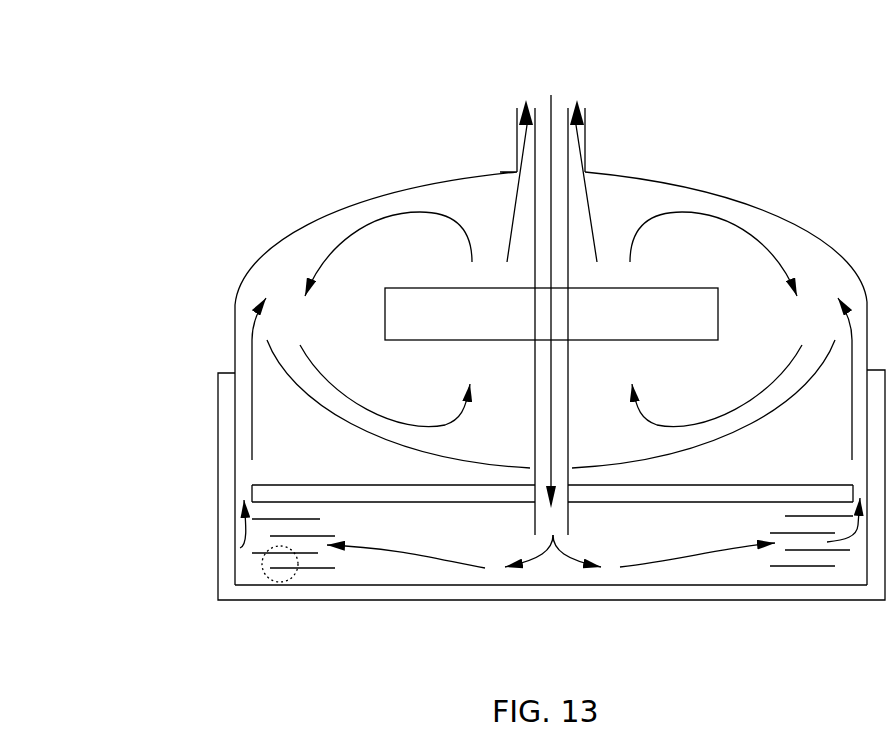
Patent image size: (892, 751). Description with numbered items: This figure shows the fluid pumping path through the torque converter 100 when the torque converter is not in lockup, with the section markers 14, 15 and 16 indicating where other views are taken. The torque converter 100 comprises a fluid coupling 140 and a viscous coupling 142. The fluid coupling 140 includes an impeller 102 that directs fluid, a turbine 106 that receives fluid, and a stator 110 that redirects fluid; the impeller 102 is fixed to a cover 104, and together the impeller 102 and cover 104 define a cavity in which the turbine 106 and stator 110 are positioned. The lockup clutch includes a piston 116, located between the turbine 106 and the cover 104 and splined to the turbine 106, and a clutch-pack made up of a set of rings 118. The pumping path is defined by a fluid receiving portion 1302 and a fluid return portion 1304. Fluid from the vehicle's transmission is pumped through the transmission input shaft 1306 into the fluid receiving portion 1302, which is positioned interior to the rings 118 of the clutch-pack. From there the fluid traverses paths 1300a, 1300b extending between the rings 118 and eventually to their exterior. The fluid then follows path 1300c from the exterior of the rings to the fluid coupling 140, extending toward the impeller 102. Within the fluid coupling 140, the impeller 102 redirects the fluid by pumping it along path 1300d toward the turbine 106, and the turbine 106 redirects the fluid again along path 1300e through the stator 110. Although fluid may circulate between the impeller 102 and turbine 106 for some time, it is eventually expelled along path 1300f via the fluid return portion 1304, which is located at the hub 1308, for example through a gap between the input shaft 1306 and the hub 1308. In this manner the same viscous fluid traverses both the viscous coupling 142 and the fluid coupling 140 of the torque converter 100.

The torque converter 100 is at (721, 89).
The impeller 102 is at (790, 226).
The cover 104 is at (740, 600).
The turbine 106 is at (770, 418).
The stator 110 is at (497, 331).
The piston 116 is at (727, 483).
The clutch-pack rings 118 is at (304, 574).
The fluid coupling 140 is at (372, 340).
The viscous coupling 142 is at (643, 549).
The fluid receiving portion 1302 is at (517, 549).
The fluid return portion 1304 is at (576, 185).
The transmission input shaft 1306 is at (569, 380).
The hub 1308 is at (517, 150).
The fluid pumping path portion 1300a is at (406, 547).
The fluid pumping path portion 1300b is at (240, 548).
The fluid pumping path portion 1300c is at (552, 379).
The fluid pumping path portion 1300d is at (551, 254).
The fluid pumping path portion 1300e is at (567, 404).
The fluid pumping path portion 1300f is at (512, 237).
The section view FIG. 14 indicator 14 is at (350, 45).
The section view FIG. 15 indicator 15 is at (22, 586).
The detail view FIG. 16 region 16 is at (268, 580).